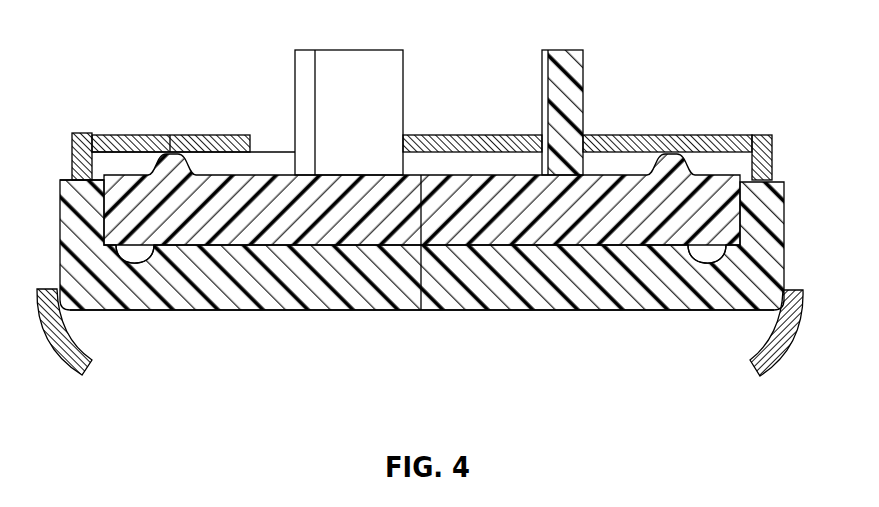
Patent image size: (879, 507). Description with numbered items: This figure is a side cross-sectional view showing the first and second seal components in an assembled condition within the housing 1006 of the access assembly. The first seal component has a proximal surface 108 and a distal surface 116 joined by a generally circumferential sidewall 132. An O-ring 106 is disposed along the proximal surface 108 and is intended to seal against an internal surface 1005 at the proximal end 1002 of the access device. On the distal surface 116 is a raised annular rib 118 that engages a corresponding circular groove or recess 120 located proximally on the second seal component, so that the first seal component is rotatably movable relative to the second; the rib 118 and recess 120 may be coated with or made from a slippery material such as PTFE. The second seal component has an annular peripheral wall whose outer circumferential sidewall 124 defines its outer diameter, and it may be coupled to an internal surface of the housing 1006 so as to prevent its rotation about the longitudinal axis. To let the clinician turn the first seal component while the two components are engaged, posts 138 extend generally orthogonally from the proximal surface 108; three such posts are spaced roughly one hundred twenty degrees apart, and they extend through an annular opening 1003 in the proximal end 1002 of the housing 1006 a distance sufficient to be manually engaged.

The O-ring 106 is at (169, 151).
The proximal surface 108 is at (112, 177).
The distal surface 116 is at (533, 247).
The annular rib 118 is at (148, 263).
The recess 120 is at (140, 263).
The outer circumferential sidewall 124 is at (784, 232).
The circumferential sidewall 132 is at (101, 177).
The post 138 is at (357, 50).
The proximal end 1002 is at (708, 135).
The annular opening 1003 is at (281, 129).
The internal surface 1005 is at (201, 161).
The housing 1006 is at (772, 370).